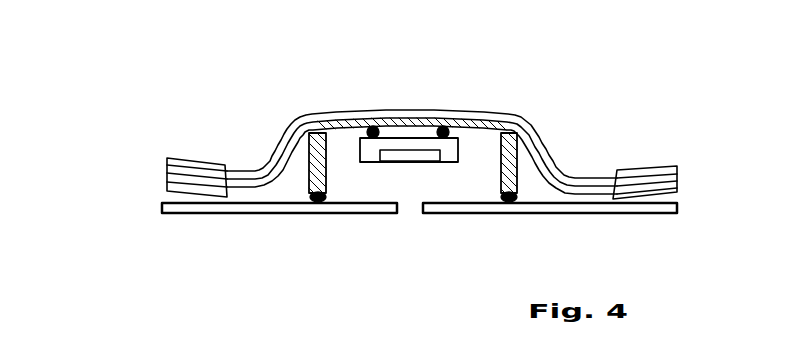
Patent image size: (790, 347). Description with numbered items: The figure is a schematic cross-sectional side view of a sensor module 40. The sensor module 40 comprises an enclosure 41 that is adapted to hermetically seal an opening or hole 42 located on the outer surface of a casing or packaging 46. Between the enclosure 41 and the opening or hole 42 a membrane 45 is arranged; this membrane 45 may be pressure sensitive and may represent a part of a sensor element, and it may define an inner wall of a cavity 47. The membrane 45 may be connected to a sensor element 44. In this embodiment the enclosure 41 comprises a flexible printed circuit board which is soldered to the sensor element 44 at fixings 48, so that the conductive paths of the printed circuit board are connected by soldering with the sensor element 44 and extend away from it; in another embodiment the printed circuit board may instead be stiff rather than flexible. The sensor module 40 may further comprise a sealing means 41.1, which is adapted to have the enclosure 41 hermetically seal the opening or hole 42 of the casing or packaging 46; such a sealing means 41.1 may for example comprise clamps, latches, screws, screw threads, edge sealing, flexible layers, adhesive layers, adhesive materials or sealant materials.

The sensor module 40 is at (257, 78).
The enclosure 41 is at (535, 133).
The sealing means 41.1 is at (317, 206).
The opening or hole 42 is at (410, 205).
The sensor element 44 is at (458, 155).
The membrane 45 is at (424, 162).
The casing or packaging 46 is at (680, 213).
The cavity 47 is at (382, 160).
The fixings 48 is at (442, 127).